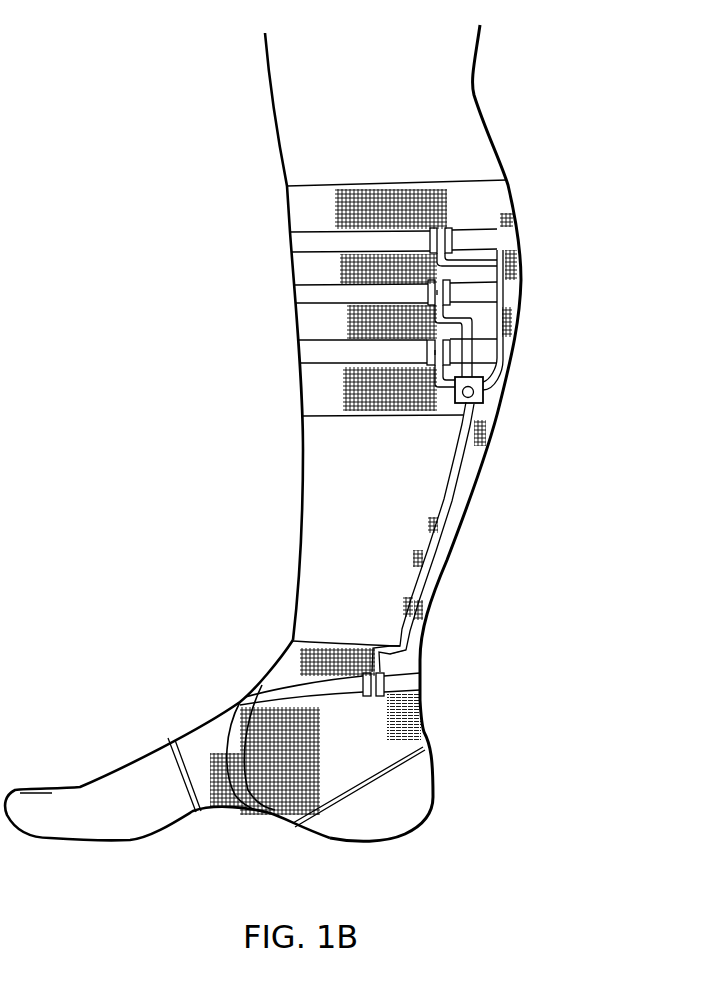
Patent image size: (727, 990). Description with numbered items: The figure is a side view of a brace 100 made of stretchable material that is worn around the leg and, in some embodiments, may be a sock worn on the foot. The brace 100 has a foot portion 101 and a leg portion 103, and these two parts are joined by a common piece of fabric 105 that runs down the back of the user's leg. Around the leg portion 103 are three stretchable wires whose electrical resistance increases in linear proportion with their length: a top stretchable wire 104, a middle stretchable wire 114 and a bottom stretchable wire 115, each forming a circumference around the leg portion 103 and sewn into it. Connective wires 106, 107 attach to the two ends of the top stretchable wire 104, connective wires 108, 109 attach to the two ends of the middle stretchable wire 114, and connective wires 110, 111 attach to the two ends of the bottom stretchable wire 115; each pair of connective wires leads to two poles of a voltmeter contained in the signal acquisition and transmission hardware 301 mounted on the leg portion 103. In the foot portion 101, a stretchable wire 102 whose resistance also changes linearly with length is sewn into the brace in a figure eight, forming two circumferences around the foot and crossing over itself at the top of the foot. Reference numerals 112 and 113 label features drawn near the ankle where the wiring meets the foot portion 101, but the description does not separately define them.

The brace 100 is at (147, 108).
The foot portion 101 is at (422, 727).
The stretchable wire 102 is at (410, 677).
The leg portion 103 is at (293, 210).
The top stretchable wire 104 is at (510, 238).
The common piece of fabric 105 is at (462, 508).
The connective wire 106 is at (520, 262).
The connective wire 107 is at (522, 277).
The connective wire 108 is at (505, 360).
The connective wire 109 is at (505, 375).
The connective wire 110 is at (450, 375).
The connective wire 111 is at (460, 370).
The trace bend 112 is at (405, 662).
The ankle connector 113 is at (372, 668).
The middle stretchable wire 114 is at (517, 293).
The bottom stretchable wire 115 is at (505, 353).
The signal acquisition and transmission hardware 301 is at (453, 378).